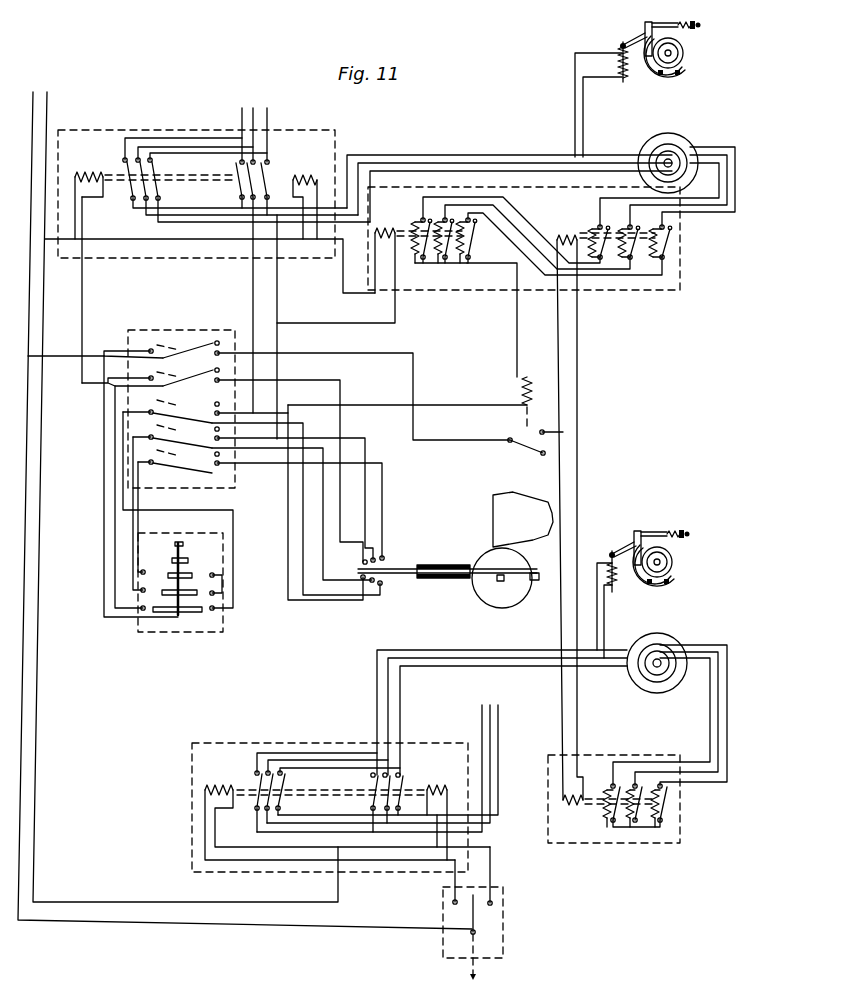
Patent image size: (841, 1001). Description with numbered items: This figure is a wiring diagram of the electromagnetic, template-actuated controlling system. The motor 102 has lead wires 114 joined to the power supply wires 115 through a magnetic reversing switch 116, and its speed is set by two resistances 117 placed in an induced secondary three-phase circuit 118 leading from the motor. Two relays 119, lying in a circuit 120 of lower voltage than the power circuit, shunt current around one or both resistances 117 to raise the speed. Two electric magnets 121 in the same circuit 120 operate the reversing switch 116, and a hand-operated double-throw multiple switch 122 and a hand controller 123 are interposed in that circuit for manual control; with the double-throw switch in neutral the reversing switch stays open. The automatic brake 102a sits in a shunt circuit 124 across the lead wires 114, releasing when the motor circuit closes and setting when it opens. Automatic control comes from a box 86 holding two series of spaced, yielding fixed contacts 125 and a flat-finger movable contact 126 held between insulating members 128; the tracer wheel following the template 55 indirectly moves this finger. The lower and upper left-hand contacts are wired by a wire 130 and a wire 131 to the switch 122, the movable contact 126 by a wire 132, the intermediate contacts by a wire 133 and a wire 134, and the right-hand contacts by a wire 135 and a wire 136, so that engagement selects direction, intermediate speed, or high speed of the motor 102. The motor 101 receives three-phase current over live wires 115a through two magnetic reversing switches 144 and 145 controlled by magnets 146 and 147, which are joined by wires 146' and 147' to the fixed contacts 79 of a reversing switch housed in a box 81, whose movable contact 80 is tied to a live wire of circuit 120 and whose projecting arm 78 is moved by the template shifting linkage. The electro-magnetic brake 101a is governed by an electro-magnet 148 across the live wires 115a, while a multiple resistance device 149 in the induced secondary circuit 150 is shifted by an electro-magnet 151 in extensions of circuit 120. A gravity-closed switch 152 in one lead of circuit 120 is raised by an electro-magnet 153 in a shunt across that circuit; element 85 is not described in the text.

The template 55 is at (523, 519).
The projecting arm 78 is at (477, 975).
The fixed contacts 79 is at (453, 904).
The movable contact 80 is at (477, 920).
The box 81 is at (440, 953).
The roller 85 is at (495, 587).
The box or enclosing frame 86 is at (513, 598).
The electric motor 101 is at (666, 637).
The electro-magnetic brake 101a is at (668, 553).
The electric motor 102 is at (680, 138).
The automatic brake 102a is at (690, 50).
The lead wires 114 is at (521, 168).
The power supply wires 115 is at (254, 151).
The line or live wires 115a is at (380, 703).
The magnetic reversing switch 116 is at (225, 176).
The resistances 117 is at (474, 250).
The induced secondary three phase circuit 118 is at (718, 194).
The relays 119 is at (395, 228).
The circuit 120 is at (48, 112).
The electric magnets 121 is at (88, 173).
The hand-operated double-throw multiple switch 122 is at (200, 330).
The hand controller 123 is at (203, 627).
The shunt circuit 124 is at (593, 113).
The fixed contacts 125 is at (382, 590).
The movable contact 126 is at (398, 577).
The insulating members 128 is at (457, 563).
The wire 130 is at (340, 452).
The wire 131 is at (366, 467).
The wire 132 is at (414, 474).
The wire 133 is at (346, 540).
The wire 134 is at (344, 590).
The wire 135 is at (383, 534).
The wire 136 is at (303, 576).
The magnetic reversing switch 144 is at (282, 797).
The magnetic reversing switch 145 is at (366, 784).
The magnet 146 is at (341, 807).
The wire 146' is at (285, 877).
The magnet 147 is at (442, 808).
The wire 147' is at (520, 875).
The electro-magnet 148 is at (624, 588).
The multiple resistance device 149 is at (670, 822).
The induced secondary three phase circuit 150 is at (713, 730).
The electro-magnet 151 is at (568, 812).
The switch 152 is at (517, 446).
The electro-magnet 153 is at (522, 392).